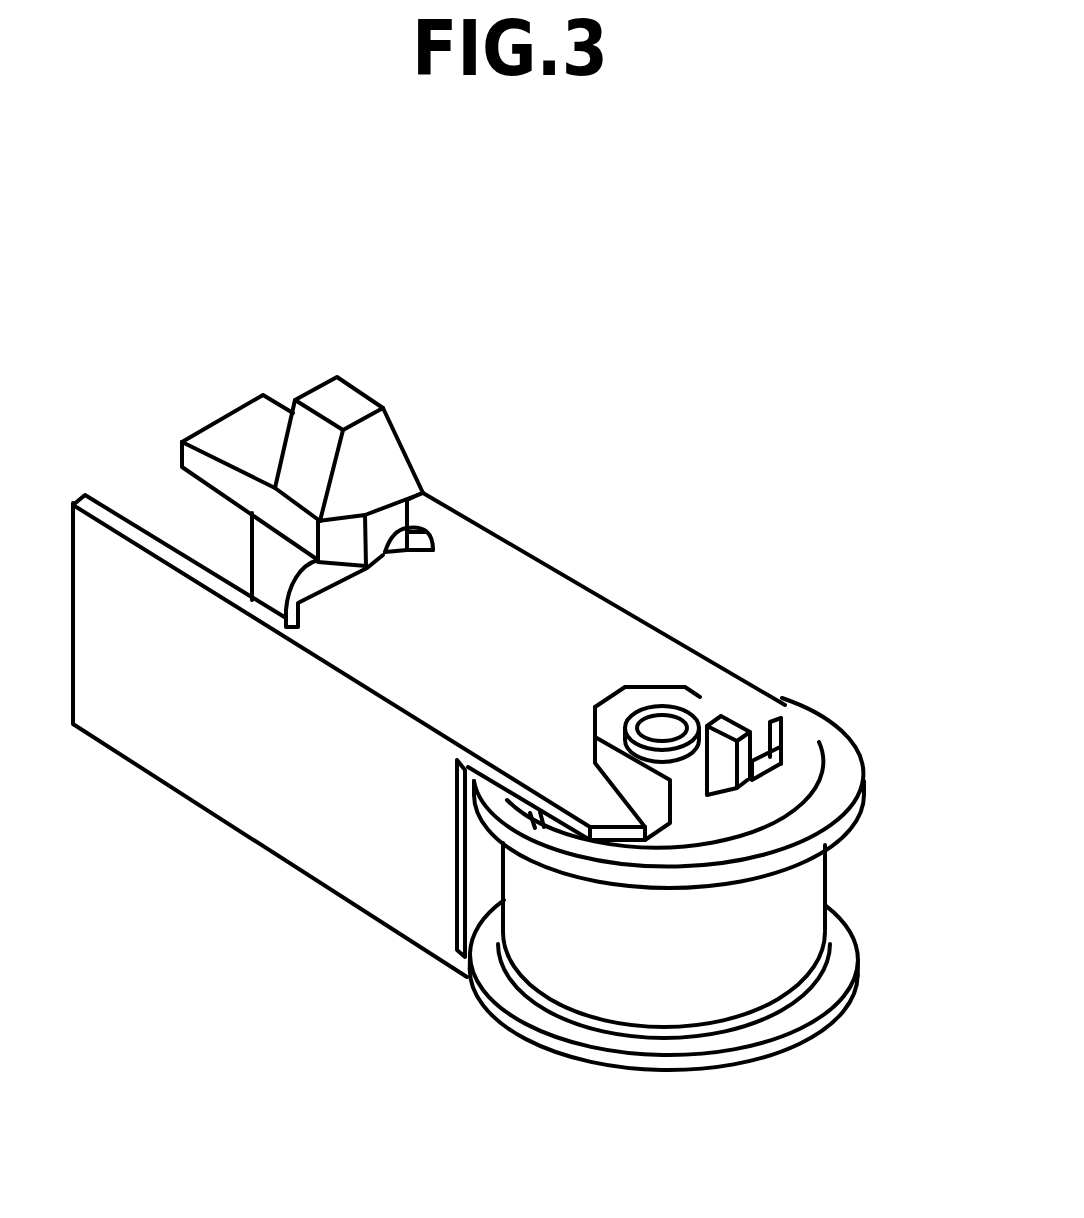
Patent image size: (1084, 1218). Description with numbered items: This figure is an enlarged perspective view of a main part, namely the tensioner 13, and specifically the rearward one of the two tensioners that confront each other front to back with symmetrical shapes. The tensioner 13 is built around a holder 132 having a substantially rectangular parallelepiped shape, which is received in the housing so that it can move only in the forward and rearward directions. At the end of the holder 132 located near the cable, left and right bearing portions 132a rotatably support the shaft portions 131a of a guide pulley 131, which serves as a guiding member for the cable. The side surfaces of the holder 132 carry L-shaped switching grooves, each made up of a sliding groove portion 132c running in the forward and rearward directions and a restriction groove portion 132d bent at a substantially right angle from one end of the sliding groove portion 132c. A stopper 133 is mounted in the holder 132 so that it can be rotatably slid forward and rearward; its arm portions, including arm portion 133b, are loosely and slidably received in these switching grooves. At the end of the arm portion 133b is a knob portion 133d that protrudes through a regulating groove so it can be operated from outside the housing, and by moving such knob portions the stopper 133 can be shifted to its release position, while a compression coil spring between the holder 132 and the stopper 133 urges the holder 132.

The tensioner 13 is at (695, 523).
The guide pulley 131 is at (857, 752).
The shaft portion 131a is at (752, 760).
The holder 132 is at (587, 596).
The bearing portion 132a is at (718, 757).
The sliding groove portion 132c is at (182, 444).
The restriction groove portion 132d is at (410, 531).
The stopper 133 is at (370, 390).
The arm portion 133b is at (433, 502).
The knob portion 133d is at (407, 452).